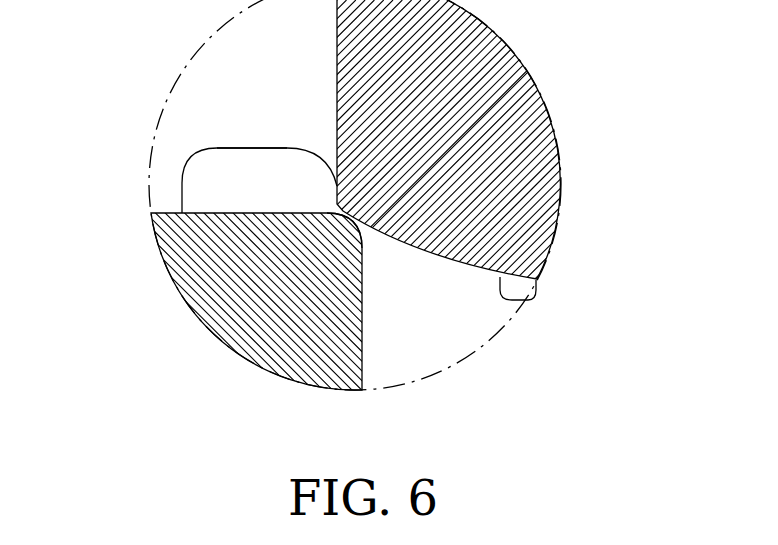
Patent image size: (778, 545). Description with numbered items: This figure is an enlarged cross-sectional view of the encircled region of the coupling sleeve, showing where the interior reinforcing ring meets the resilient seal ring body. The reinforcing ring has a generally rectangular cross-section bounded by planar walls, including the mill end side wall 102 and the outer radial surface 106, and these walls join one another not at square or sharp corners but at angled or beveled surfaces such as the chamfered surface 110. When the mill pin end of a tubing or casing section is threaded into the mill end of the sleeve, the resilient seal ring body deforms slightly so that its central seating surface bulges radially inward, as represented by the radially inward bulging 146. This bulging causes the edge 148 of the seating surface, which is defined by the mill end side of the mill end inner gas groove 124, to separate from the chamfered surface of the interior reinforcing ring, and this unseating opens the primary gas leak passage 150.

The mill end side wall 102 is at (363, 343).
The outer radial surface 106 is at (227, 213).
The chamfered surface 110 is at (355, 225).
The mill end inner gas groove 124 is at (247, 148).
The radially inward bulging 146 is at (520, 301).
The edge of the seating surface 148 is at (343, 210).
The primary gas leak passage 150 is at (370, 236).